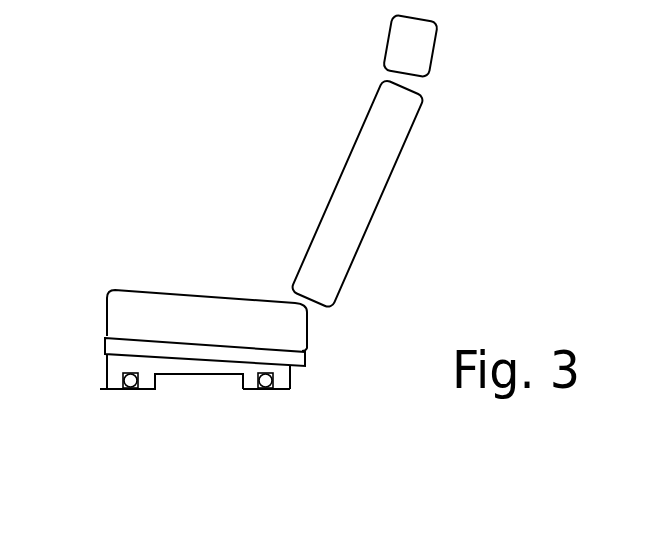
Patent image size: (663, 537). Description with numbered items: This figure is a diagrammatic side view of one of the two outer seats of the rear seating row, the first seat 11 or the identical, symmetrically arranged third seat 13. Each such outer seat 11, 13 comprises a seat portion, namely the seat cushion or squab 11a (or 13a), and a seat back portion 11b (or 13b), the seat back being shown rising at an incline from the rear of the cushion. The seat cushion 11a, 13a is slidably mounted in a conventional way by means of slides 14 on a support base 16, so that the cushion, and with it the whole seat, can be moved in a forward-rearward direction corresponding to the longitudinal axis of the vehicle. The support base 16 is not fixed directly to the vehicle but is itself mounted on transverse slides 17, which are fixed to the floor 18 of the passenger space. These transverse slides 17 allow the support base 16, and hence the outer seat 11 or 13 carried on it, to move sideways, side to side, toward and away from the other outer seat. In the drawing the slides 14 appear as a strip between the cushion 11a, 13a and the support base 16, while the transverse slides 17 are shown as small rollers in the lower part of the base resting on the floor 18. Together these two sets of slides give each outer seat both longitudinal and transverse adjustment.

The seat 11 is at (263, 229).
The seat 13 is at (263, 229).
The seat portion 11a is at (164, 296).
The seat portion 13a is at (126, 308).
The seat back portion 11b is at (397, 161).
The seat back portion 13b is at (377, 192).
The slides 14 is at (290, 360).
The support base 16 is at (290, 380).
The transverse slides 17 is at (269, 377).
The floor 18 is at (285, 392).